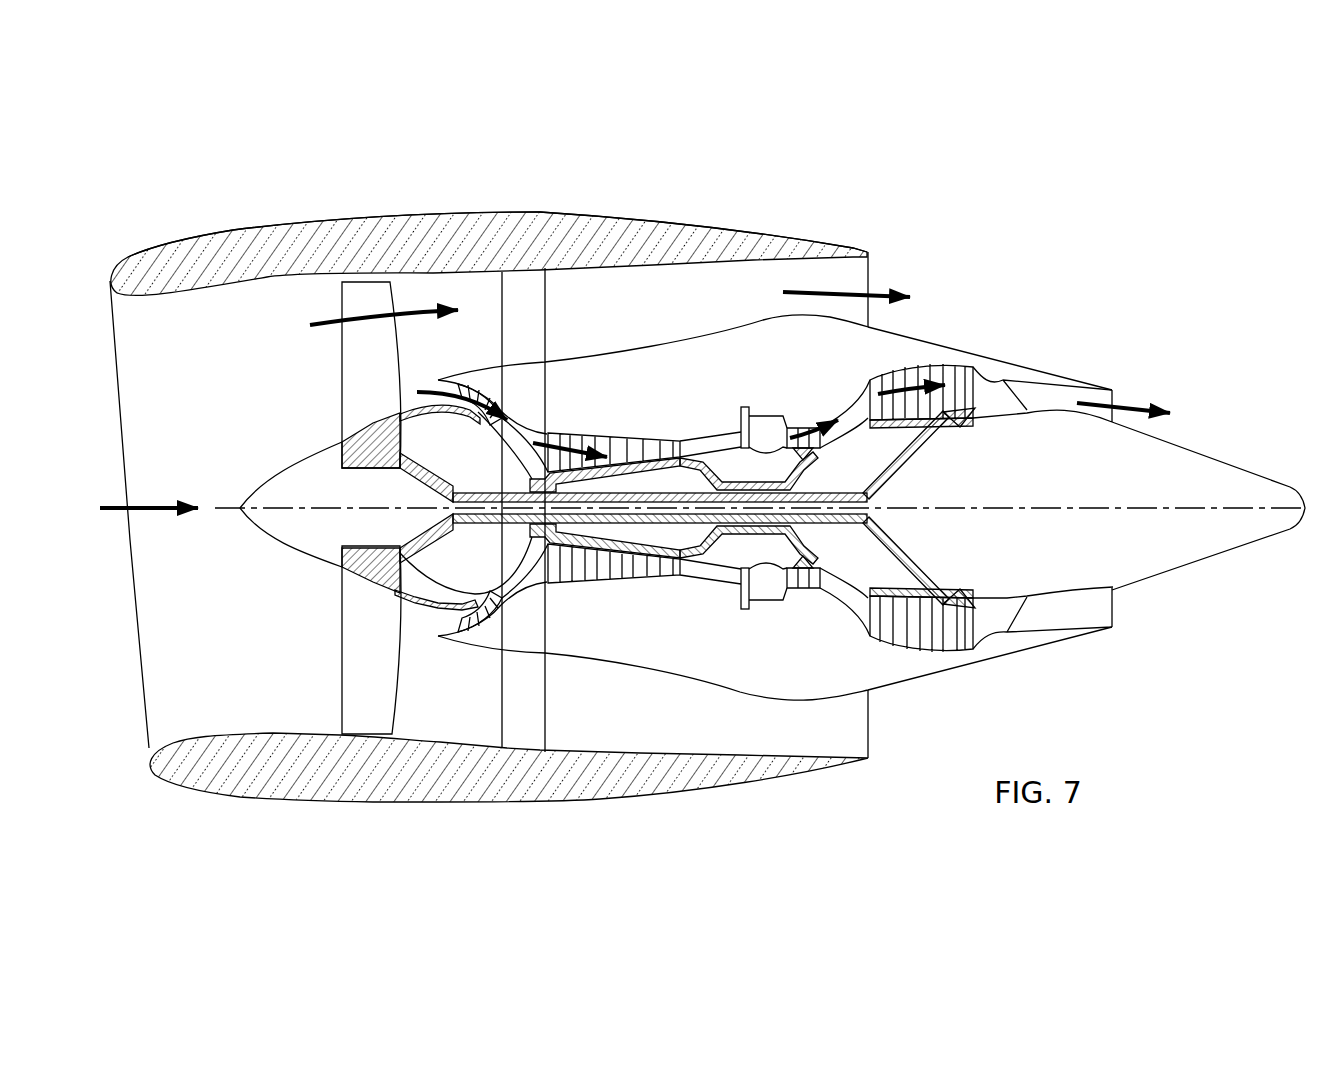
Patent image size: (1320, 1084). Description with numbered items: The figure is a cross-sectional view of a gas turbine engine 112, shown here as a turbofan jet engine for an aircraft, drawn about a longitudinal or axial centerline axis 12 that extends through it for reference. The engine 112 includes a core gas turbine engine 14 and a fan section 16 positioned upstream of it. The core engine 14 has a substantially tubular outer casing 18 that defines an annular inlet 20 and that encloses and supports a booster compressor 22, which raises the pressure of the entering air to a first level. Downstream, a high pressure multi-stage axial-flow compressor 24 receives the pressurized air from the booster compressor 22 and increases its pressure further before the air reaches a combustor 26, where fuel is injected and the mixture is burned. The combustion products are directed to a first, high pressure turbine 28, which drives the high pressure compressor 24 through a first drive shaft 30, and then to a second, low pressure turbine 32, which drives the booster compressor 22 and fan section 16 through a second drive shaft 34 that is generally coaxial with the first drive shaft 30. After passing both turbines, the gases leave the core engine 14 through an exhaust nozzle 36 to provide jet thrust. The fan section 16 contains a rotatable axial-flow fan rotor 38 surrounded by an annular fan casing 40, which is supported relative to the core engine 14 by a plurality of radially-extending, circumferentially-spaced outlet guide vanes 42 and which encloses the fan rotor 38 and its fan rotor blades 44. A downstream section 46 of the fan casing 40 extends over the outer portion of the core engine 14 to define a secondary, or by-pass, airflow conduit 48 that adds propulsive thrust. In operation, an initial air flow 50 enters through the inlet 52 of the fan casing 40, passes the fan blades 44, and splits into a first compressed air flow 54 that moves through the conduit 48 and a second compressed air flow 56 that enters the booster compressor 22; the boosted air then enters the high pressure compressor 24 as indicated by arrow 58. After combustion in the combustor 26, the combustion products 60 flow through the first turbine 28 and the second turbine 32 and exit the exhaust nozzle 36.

The gas turbine engine 112 is at (1025, 243).
The axial centerline axis 12 is at (1060, 507).
The core gas turbine engine 14 is at (717, 400).
The fan section 16 is at (388, 197).
The outer casing 18 is at (717, 687).
The annular inlet 20 is at (447, 623).
The booster compressor 22 is at (504, 581).
The high pressure compressor 24 is at (577, 570).
The combustor 26 is at (763, 577).
The first turbine 28 is at (820, 578).
The first drive shaft 30 is at (797, 460).
The second turbine 32 is at (960, 643).
The second drive shaft 34 is at (512, 492).
The exhaust nozzle 36 is at (1113, 399).
The fan rotor 38 is at (400, 466).
The fan casing 40 is at (383, 802).
The outlet guide vanes 42 is at (547, 316).
The fan rotor blades 44 is at (340, 674).
The downstream section of the fan casing 46 is at (770, 233).
The by-pass airflow conduit 48 is at (688, 307).
The initial air flow 50 is at (139, 505).
The inlet 52 is at (145, 743).
The first compressed air flow 54 is at (353, 317).
The second compressed air flow 56 is at (431, 388).
The air flow entering the high pressure compressor 58 is at (563, 431).
The combustion products 60 is at (817, 413).